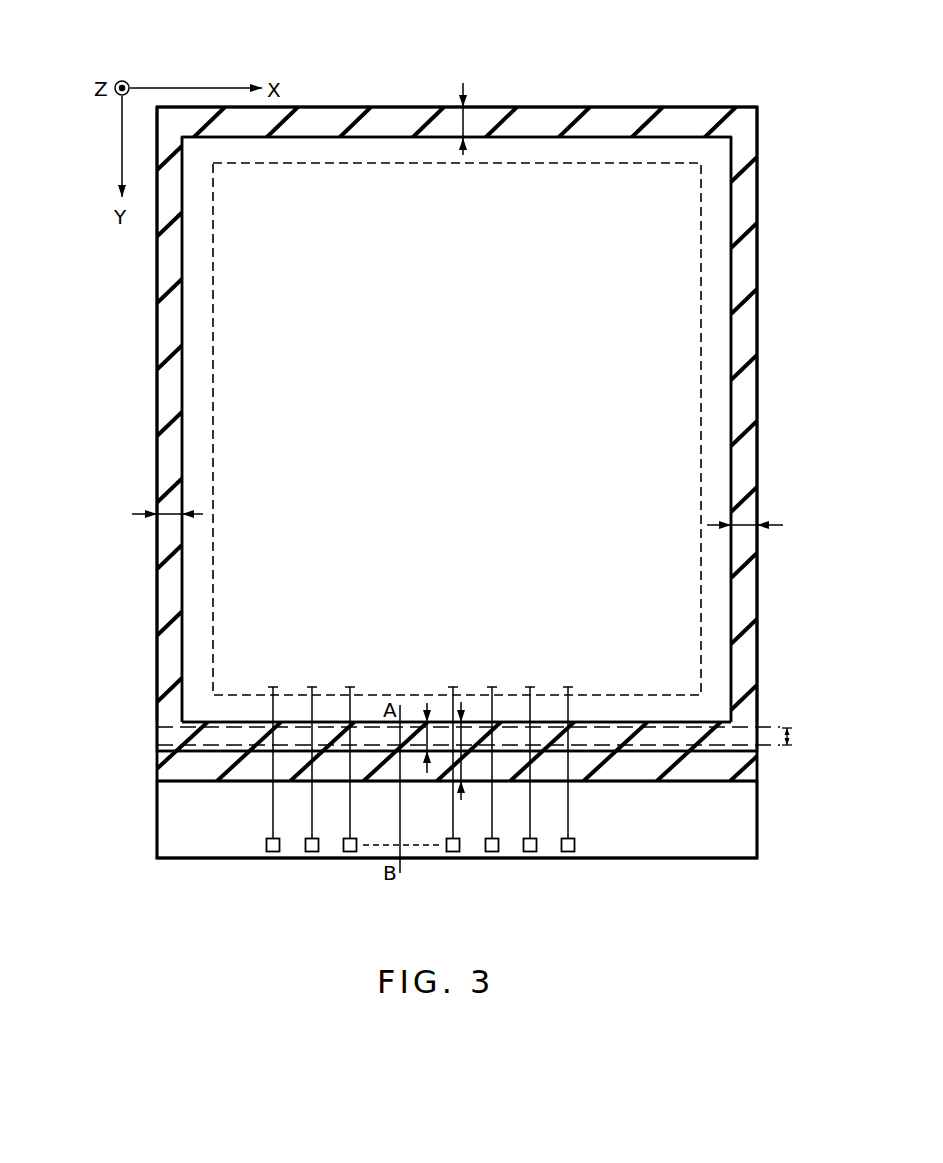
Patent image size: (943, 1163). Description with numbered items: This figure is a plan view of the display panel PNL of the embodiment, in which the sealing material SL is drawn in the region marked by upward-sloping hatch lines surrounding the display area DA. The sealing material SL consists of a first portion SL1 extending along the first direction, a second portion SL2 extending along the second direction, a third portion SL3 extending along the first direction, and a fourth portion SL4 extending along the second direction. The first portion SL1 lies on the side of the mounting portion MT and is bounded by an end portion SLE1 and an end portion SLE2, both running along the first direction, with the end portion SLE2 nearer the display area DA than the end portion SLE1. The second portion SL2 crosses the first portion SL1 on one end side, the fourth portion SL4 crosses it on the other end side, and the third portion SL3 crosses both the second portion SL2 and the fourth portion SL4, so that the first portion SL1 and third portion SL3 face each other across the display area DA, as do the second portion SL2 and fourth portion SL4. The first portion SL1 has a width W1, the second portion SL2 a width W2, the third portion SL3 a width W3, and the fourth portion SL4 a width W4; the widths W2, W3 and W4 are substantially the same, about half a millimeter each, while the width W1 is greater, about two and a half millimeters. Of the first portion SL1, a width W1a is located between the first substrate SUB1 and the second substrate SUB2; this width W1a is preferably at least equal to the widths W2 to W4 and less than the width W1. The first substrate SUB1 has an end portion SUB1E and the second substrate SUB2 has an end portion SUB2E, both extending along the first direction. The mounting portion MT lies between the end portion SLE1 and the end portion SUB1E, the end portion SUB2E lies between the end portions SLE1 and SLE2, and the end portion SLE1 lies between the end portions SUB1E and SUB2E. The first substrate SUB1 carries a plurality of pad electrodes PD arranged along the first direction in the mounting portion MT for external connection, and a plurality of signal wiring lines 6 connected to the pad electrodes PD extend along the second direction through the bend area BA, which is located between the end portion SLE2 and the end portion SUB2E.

The display panel PNL is at (708, 88).
The display area DA is at (307, 162).
The sealing material SL is at (540, 122).
The first portion SL1 is at (510, 768).
The second portion SL2 is at (172, 597).
The third portion SL3 is at (401, 124).
The fourth portion SL4 is at (745, 546).
The end portion SLE1 is at (598, 786).
The end portion SLE2 is at (598, 718).
The width W1 is at (462, 744).
The width W1a is at (426, 738).
The width W2 is at (170, 514).
The width W3 is at (466, 120).
The width W4 is at (743, 522).
The first substrate SUB1 is at (185, 836).
The end portion SUB1E is at (203, 859).
The second substrate SUB2 is at (156, 724).
The end portion SUB2E is at (202, 756).
The bend area BA is at (795, 737).
The mounting portion MT is at (726, 824).
The signal wiring lines 6 is at (272, 807).
The pad electrodes PD is at (273, 852).